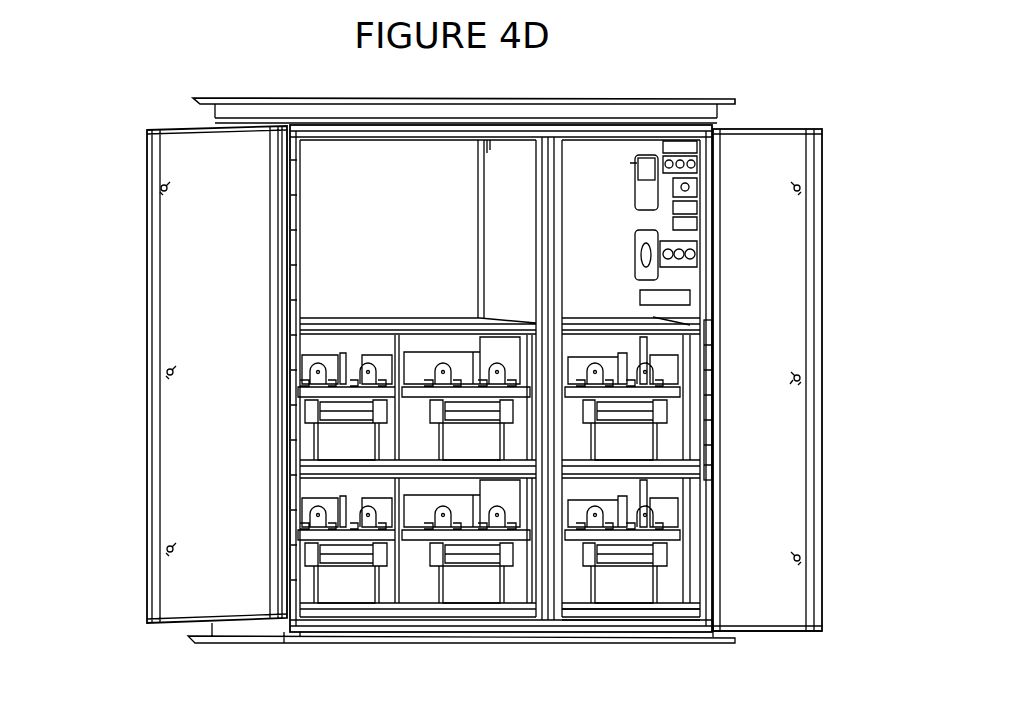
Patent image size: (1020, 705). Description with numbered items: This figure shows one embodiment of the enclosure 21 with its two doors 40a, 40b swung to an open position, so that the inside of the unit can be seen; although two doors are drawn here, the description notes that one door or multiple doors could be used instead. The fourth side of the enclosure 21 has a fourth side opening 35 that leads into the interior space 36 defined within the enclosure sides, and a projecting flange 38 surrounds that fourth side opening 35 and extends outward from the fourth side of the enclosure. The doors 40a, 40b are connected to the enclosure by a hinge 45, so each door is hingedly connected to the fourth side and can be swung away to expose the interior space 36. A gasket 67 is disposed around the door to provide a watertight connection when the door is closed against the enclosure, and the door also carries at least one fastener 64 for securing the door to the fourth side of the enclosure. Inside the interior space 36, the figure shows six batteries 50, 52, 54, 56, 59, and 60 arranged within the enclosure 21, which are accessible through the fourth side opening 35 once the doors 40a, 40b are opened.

The enclosure 21 is at (166, 78).
The fourth side opening 35 is at (663, 608).
The interior space 36 is at (324, 159).
The projecting flange 38 is at (557, 158).
The door 40a is at (818, 231).
The door 40b is at (150, 226).
The hinge 45 is at (713, 338).
The battery 50 is at (605, 392).
The battery 52 is at (455, 392).
The battery 54 is at (342, 392).
The battery 56 is at (355, 578).
The battery 59 is at (478, 578).
The battery 60 is at (628, 578).
The fastener 64 is at (790, 378).
The gasket 67 is at (773, 612).